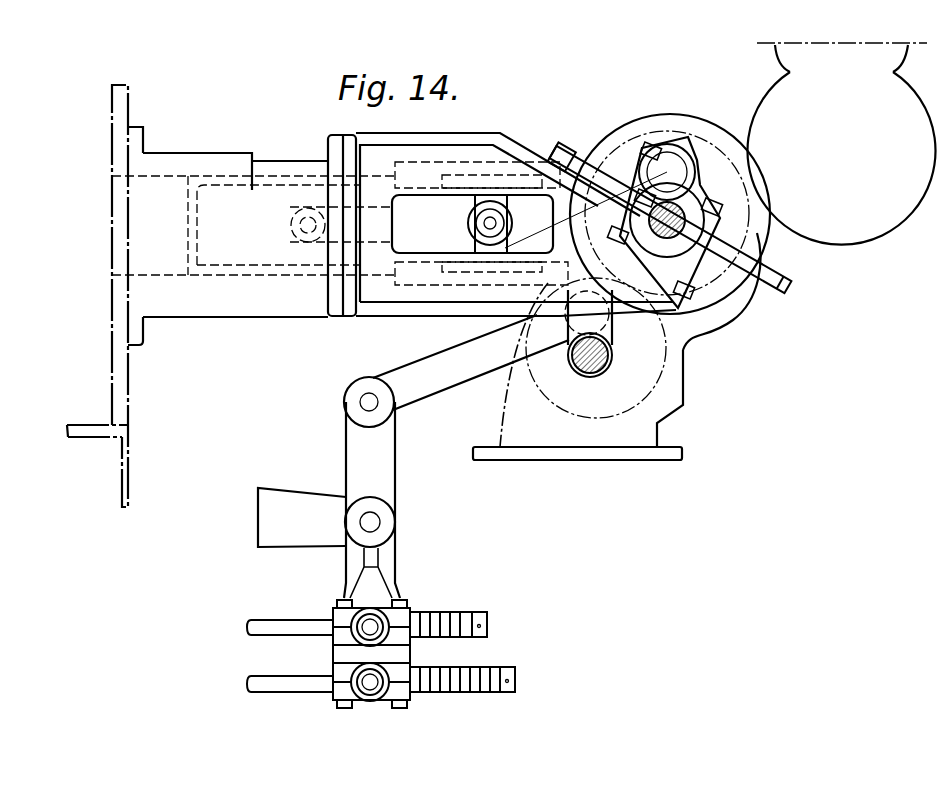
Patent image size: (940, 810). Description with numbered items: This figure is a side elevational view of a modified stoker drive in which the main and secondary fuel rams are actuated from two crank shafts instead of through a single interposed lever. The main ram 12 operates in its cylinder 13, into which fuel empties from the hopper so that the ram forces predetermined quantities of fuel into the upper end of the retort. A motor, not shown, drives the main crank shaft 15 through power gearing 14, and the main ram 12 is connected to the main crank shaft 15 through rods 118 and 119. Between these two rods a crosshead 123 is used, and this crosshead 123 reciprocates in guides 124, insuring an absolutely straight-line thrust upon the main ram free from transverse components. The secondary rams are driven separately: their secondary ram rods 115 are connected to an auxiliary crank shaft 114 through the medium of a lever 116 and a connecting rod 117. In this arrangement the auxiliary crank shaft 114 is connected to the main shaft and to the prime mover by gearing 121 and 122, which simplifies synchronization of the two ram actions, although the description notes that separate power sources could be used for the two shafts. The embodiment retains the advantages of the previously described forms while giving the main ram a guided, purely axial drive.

The main fuel ram 12 is at (237, 267).
The cylinder 13 is at (220, 165).
The power gearing 14 is at (838, 227).
The main crank shaft 15 is at (687, 230).
The auxiliary crank shaft 114 is at (590, 377).
The secondary ram rods 115 is at (297, 645).
The lever 116 is at (388, 477).
The connecting rod 117 is at (455, 378).
The rod 118 is at (472, 224).
The rod 119 is at (567, 212).
The gearing 121 is at (655, 370).
The gearing 122 is at (728, 318).
The crosshead 123 is at (497, 178).
The guides 124 is at (425, 177).